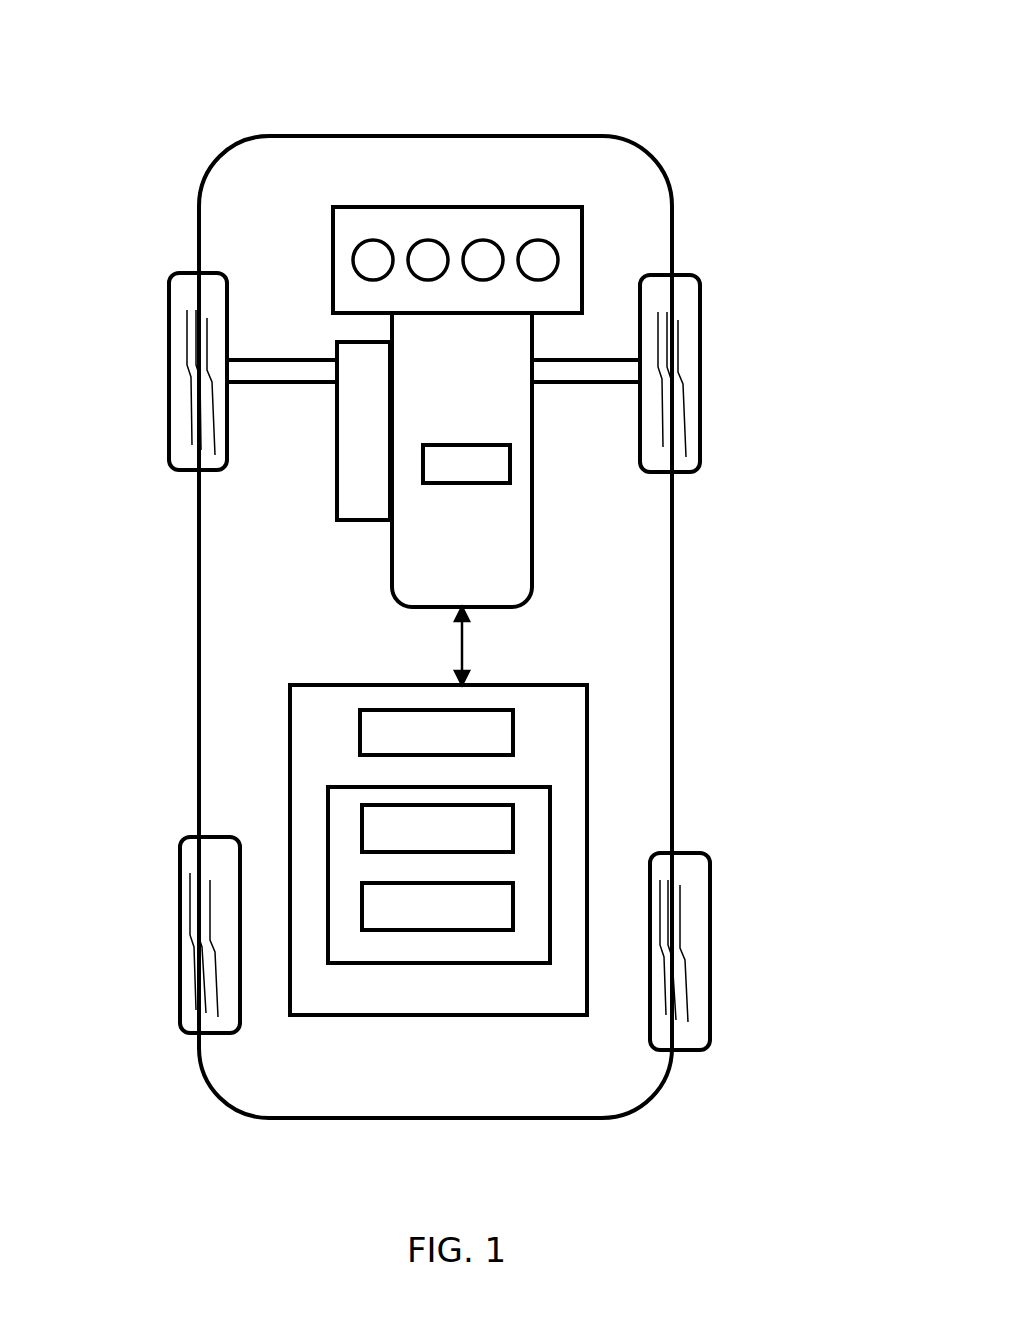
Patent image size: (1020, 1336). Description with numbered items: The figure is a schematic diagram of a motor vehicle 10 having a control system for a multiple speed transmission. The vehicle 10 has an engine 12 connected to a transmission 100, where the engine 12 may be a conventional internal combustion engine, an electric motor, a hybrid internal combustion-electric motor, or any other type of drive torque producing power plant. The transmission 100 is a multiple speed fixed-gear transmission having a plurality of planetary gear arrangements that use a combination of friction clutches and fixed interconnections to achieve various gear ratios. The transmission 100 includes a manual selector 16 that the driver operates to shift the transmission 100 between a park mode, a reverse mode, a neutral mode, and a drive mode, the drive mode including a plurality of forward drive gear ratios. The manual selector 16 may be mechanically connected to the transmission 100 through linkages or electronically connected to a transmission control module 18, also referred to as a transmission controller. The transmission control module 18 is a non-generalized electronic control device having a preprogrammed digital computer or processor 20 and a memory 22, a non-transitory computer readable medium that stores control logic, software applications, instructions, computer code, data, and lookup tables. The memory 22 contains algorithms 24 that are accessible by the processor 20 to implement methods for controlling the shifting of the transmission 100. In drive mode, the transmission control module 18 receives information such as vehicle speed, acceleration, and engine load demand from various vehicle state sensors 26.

The motor vehicle 10 is at (575, 137).
The engine 12 is at (582, 258).
The manual selector 16 is at (337, 470).
The transmission control module 18 is at (310, 744).
The processor 20 is at (480, 730).
The memory 22 is at (349, 963).
The algorithms 24 is at (478, 825).
The vehicle state sensors 26 is at (470, 462).
The transmission 100 is at (532, 530).